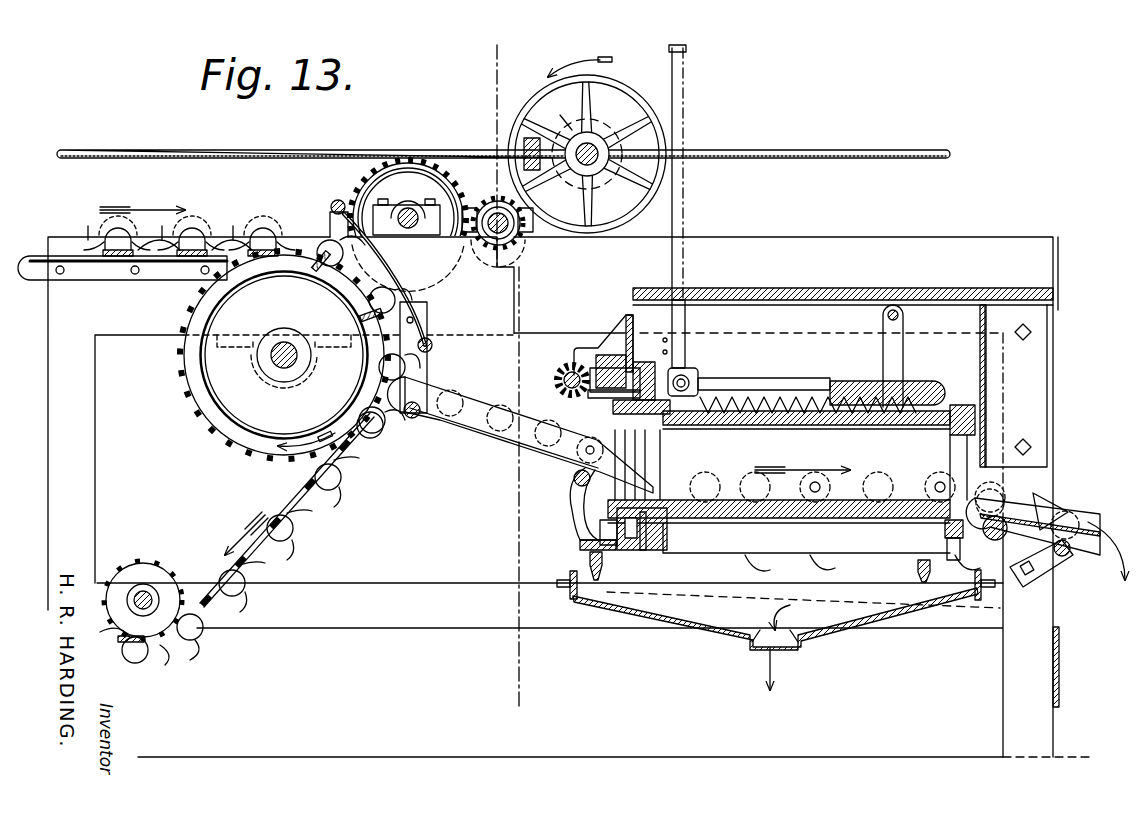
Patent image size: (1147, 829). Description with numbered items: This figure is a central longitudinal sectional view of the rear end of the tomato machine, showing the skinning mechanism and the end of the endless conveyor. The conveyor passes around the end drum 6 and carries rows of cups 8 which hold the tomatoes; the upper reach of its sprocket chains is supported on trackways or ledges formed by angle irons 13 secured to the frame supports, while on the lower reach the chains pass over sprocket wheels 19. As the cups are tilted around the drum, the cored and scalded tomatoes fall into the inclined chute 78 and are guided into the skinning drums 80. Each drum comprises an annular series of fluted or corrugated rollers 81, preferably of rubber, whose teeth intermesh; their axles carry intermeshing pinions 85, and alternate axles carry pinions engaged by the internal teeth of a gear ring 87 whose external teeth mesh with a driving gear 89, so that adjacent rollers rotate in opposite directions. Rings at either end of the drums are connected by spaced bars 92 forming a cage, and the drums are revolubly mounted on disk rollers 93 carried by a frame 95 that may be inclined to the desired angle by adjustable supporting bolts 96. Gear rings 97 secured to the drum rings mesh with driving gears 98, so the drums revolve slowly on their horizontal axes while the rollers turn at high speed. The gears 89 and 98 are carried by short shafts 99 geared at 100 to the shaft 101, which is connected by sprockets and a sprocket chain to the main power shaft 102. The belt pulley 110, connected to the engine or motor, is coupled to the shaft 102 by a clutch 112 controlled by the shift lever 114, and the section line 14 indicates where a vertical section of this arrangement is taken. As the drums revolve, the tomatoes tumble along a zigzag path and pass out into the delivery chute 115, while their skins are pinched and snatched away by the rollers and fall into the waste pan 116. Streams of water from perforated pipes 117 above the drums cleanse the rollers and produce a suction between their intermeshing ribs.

The end drum 6 is at (237, 435).
The cups 8 is at (290, 527).
The angle irons 13 is at (100, 270).
The shift lever 14 is at (520, 72).
The sprocket wheels 19 is at (160, 570).
The inclined chute 78 is at (502, 437).
The skinning drums 80 is at (742, 440).
The rollers 81 is at (897, 428).
The pinions 85 is at (630, 412).
The gear ring 87 is at (637, 548).
The driving gear 89 is at (668, 348).
The spaced bars 92 is at (795, 405).
The disk rollers 93 is at (962, 553).
The frame 95 is at (580, 540).
The adjustable supporting bolts 96 is at (918, 575).
The gear rings 97 is at (645, 535).
The driving gears 98 is at (690, 370).
The short shafts 99 is at (612, 398).
The gearing 100 is at (575, 370).
The shaft 101 is at (548, 378).
The main power shaft 102 is at (655, 85).
The belt pulley 110 is at (690, 137).
The clutch 112 is at (559, 112).
The shift lever 114 is at (833, 150).
The delivery chute 115 is at (1085, 530).
The waste pan 116 is at (727, 638).
The perforated pipes 117 is at (887, 383).